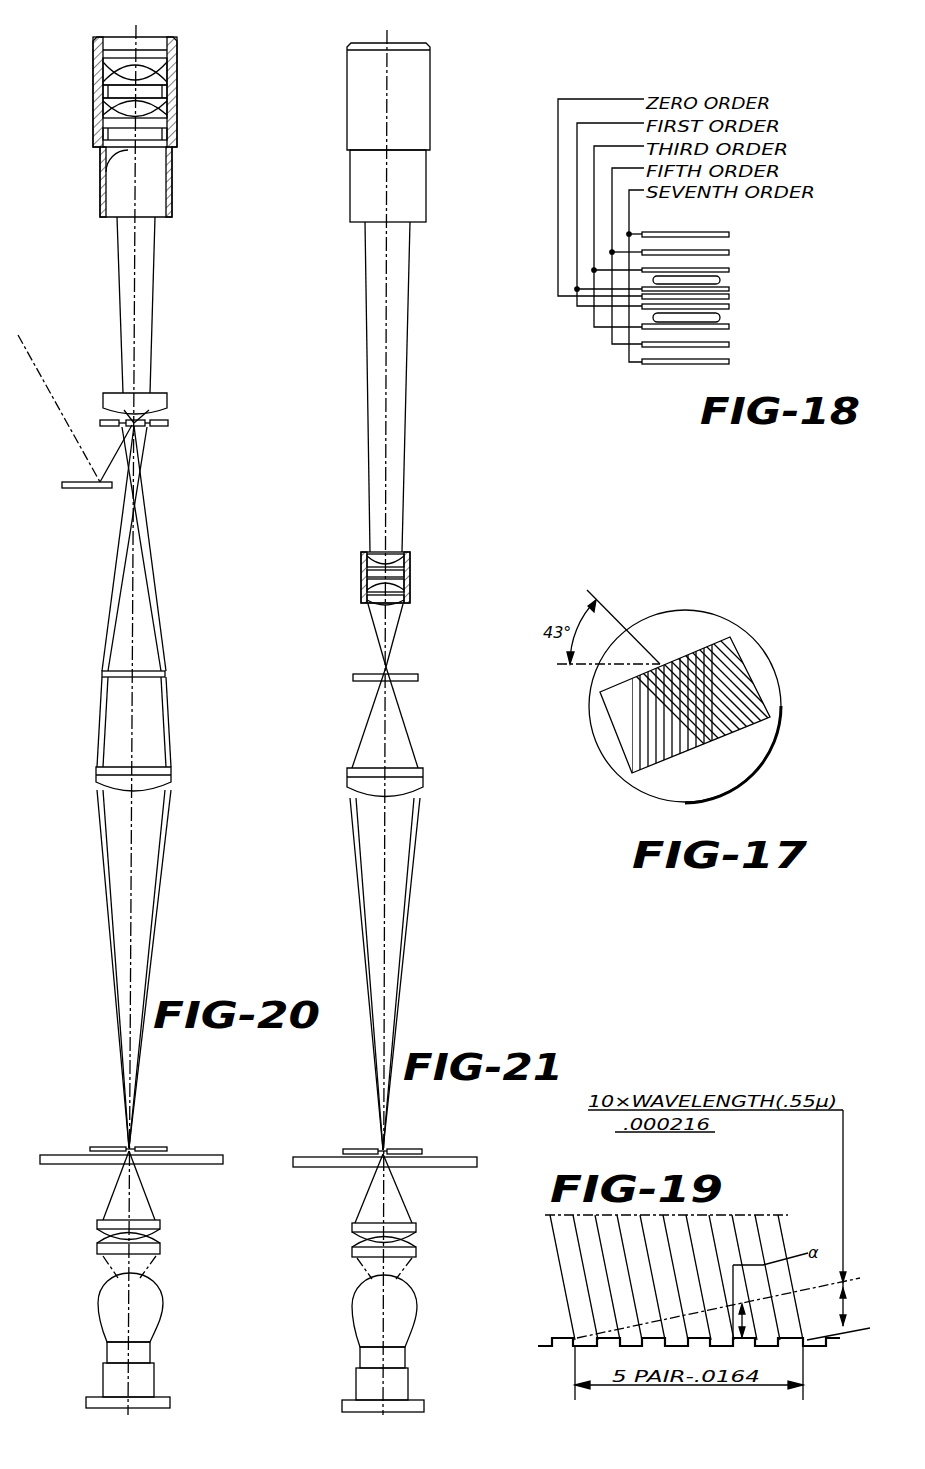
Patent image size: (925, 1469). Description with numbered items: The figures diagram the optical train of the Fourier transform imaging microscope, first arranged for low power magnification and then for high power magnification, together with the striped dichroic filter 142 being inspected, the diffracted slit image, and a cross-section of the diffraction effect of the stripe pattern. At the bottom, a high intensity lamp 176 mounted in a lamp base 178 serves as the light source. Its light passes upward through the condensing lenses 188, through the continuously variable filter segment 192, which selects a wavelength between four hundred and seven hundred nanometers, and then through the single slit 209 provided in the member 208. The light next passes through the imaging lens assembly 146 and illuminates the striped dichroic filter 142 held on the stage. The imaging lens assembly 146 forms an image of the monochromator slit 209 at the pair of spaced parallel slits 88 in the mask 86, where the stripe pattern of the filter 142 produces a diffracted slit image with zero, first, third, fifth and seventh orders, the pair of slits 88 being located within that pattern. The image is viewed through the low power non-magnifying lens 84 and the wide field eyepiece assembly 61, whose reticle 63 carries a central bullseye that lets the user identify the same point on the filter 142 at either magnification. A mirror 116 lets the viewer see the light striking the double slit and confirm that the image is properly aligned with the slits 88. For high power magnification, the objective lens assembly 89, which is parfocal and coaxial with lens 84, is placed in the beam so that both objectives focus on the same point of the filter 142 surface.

In FIG. 20, the wide field eyepiece assembly 61 is at (173, 90).
In FIG. 21, the wide field eyepiece assembly 61 is at (422, 92).
In FIG. 20, the reticle 63 is at (120, 170).
In FIG. 20, the non-magnifying lens 84 is at (163, 398).
In FIG. 20, the mask 86 is at (170, 421).
In FIG. 20, the slits 88 is at (147, 426).
In FIG. 18, the slits 88 is at (718, 280).
In FIG. 21, the objective lens assembly 89 is at (410, 562).
In FIG. 20, the mirror 116 is at (84, 490).
In FIG. 20, the striped dichroic filter 142 is at (102, 673).
In FIG. 21, the striped dichroic filter 142 is at (356, 674).
In FIG. 17, the striped dichroic filter 142 is at (733, 640).
In FIG. 20, the imaging lens assembly 146 is at (96, 775).
In FIG. 21, the imaging lens assembly 146 is at (350, 782).
In FIG. 20, the high intensity lamp 176 is at (107, 1298).
In FIG. 21, the high intensity lamp 176 is at (400, 1318).
In FIG. 20, the lamp base 178 is at (110, 1385).
In FIG. 21, the lamp base 178 is at (400, 1388).
In FIG. 20, the condensing lenses 188 is at (100, 1233).
In FIG. 21, the condensing lenses 188 is at (416, 1240).
In FIG. 20, the continuously variable filter segment 192 is at (85, 1164).
In FIG. 21, the continuously variable filter segment 192 is at (345, 1167).
In FIG. 20, the member 208 is at (100, 1147).
In FIG. 21, the member 208 is at (365, 1149).
In FIG. 20, the single slit 209 is at (129, 1147).
In FIG. 21, the single slit 209 is at (387, 1150).